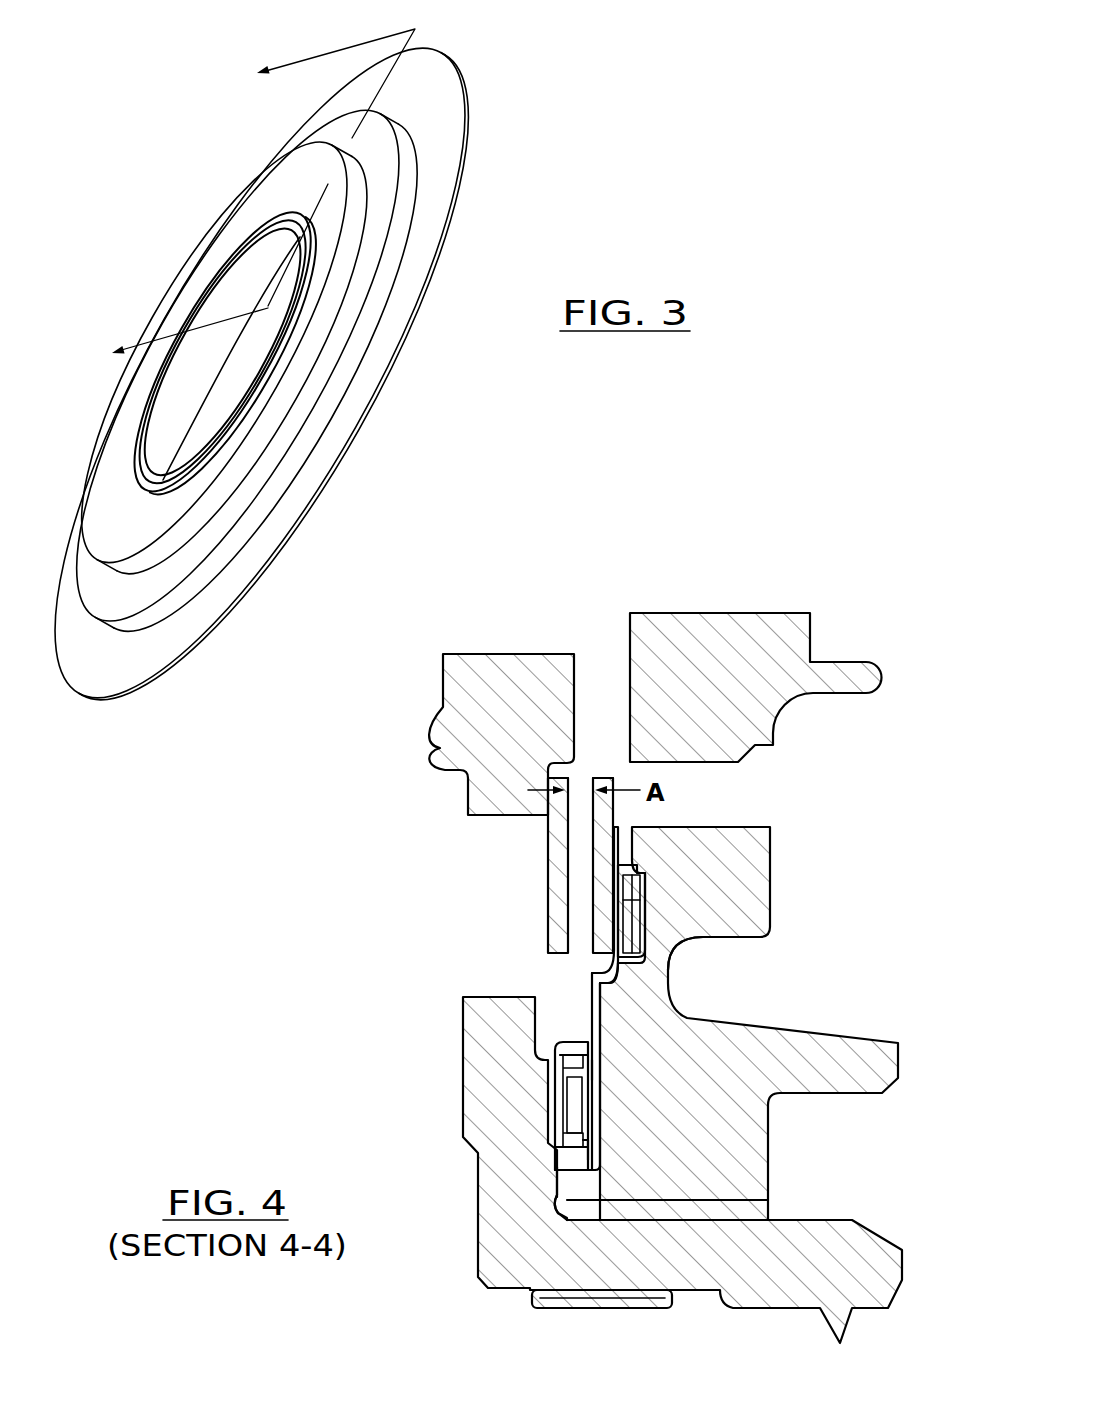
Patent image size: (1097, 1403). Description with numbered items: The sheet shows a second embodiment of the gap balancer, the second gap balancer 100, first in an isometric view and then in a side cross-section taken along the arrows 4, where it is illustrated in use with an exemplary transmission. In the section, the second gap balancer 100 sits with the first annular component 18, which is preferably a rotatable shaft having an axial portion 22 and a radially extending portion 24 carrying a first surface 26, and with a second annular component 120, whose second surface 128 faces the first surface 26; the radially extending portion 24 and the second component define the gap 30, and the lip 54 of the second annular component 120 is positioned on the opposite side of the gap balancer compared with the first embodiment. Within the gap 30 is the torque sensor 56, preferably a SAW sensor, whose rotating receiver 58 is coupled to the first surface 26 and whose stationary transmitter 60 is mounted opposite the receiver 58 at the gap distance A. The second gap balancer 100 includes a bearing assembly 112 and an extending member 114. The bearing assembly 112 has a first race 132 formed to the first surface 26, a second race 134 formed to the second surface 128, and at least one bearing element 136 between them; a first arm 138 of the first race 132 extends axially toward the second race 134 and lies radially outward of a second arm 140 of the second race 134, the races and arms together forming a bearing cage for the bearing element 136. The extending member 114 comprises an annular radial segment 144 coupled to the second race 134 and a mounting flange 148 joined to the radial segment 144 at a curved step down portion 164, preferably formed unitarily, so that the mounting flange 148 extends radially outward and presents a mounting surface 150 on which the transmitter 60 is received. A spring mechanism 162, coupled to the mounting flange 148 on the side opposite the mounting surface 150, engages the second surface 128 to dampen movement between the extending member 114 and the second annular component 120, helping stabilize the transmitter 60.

In FIG. 3, the section arrows 4- 4 is at (271, 180).
In FIG. 4, the first annular component 18 is at (523, 678).
In FIG. 4, the axial portion 22 is at (698, 1270).
In FIG. 4, the radially extending portion 24 is at (477, 1028).
In FIG. 4, the first surface 26 is at (578, 660).
In FIG. 4, the gap 30 is at (565, 1208).
In FIG. 4, the lip 54 is at (573, 1180).
In FIG. 4, the torque sensor 56 is at (490, 849).
In FIG. 4, the receiver 58 is at (553, 835).
In FIG. 4, the transmitter 60 is at (604, 820).
In FIG. 3, the second gap balancer 100 is at (137, 101).
In FIG. 4, the second gap balancer 100 is at (498, 956).
In FIG. 3, the bearing assembly 112 is at (186, 401).
In FIG. 4, the bearing assembly 112 is at (603, 1089).
In FIG. 3, the extending member 114 is at (421, 318).
In FIG. 4, the extending member 114 is at (603, 1009).
In FIG. 4, the second annular component 120 is at (690, 643).
In FIG. 4, the second surface 128 is at (628, 632).
In FIG. 4, the first race 132 is at (557, 1080).
In FIG. 4, the second race 134 is at (595, 1068).
In FIG. 4, the bearing element 136 is at (577, 1107).
In FIG. 4, the first arm 138 is at (570, 1040).
In FIG. 4, the second arm 140 is at (580, 1165).
In FIG. 4, the radial segment 144 is at (585, 993).
In FIG. 3, the mounting flange 148 is at (421, 238).
In FIG. 4, the mounting flange 148 is at (618, 893).
In FIG. 3, the mounting surface 150 is at (330, 455).
In FIG. 4, the mounting surface 150 is at (613, 900).
In FIG. 4, the spring mechanism 162 is at (627, 932).
In FIG. 3, the curved step down portion 164 is at (358, 356).
In FIG. 4, the curved step down portion 164 is at (668, 955).